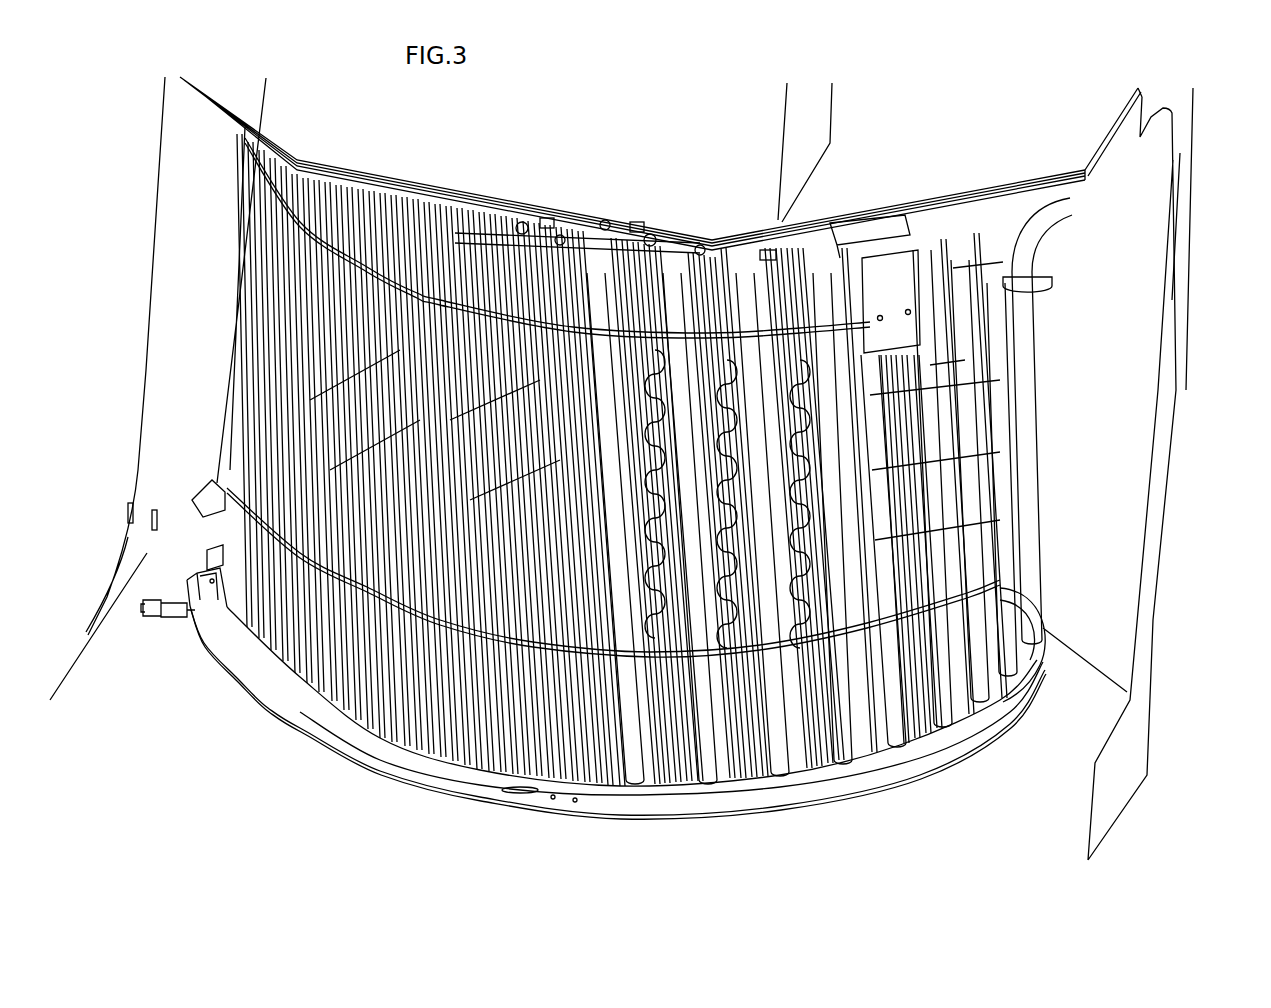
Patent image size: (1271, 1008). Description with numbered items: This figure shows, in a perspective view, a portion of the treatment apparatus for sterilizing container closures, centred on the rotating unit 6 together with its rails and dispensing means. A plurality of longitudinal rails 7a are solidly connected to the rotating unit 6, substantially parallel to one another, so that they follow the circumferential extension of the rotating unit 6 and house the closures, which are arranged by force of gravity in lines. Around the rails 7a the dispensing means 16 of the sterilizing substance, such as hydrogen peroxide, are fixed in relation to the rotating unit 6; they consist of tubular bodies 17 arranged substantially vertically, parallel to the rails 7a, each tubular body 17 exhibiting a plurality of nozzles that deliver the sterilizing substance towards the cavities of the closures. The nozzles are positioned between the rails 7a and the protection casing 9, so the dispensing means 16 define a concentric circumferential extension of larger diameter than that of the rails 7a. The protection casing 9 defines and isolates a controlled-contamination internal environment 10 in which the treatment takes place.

The rotating unit 6 is at (522, 517).
The longitudinal rail 7a is at (397, 718).
The tubular body 17 is at (233, 307).
The dispensing means 16 is at (1052, 349).
The internal environment 10 is at (1113, 395).
The protection casing 9 is at (1176, 358).